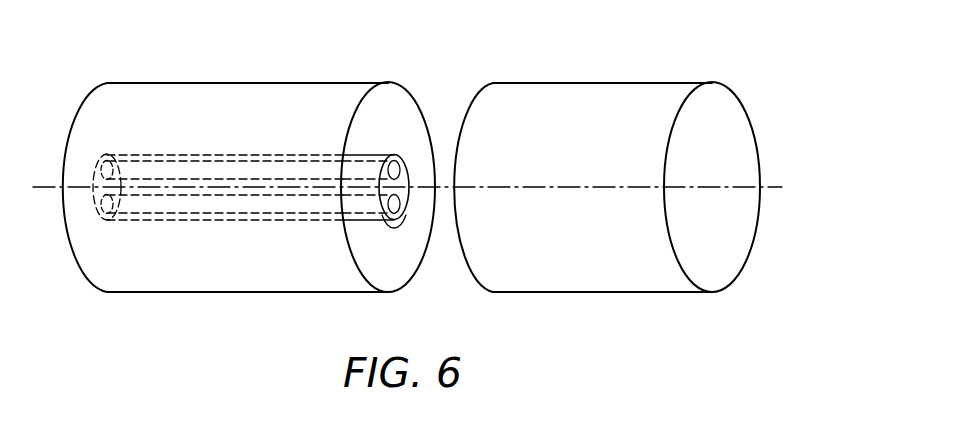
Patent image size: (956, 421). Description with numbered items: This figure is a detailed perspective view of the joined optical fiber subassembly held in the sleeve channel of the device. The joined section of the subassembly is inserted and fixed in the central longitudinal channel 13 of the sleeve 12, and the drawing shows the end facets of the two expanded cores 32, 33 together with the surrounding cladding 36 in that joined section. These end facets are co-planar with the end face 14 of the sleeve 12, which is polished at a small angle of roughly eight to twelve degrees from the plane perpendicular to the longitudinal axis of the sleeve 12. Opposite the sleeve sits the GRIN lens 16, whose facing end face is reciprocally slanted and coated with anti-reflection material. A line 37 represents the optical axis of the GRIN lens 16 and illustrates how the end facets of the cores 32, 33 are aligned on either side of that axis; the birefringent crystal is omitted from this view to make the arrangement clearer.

The sleeve 12 is at (175, 108).
The central longitudinal channel 13 is at (180, 222).
The end face 14 is at (390, 93).
The GRIN lens 16 is at (602, 100).
The expanded core 32 is at (397, 155).
The expanded core 33 is at (396, 219).
The cladding 36 is at (397, 214).
The line 37 is at (442, 187).